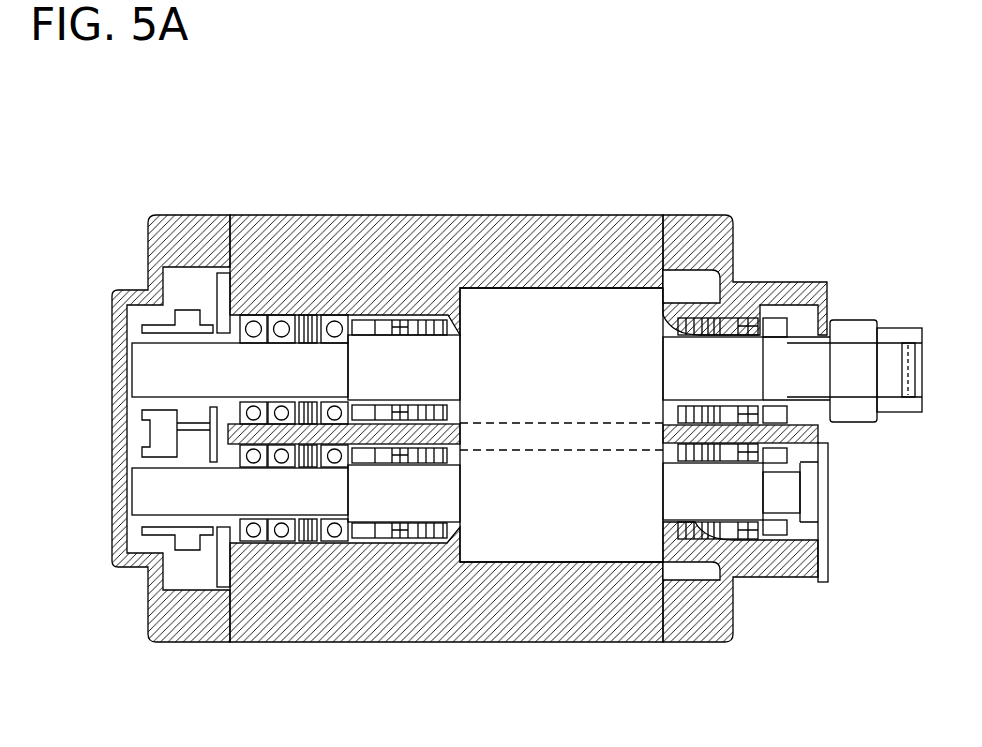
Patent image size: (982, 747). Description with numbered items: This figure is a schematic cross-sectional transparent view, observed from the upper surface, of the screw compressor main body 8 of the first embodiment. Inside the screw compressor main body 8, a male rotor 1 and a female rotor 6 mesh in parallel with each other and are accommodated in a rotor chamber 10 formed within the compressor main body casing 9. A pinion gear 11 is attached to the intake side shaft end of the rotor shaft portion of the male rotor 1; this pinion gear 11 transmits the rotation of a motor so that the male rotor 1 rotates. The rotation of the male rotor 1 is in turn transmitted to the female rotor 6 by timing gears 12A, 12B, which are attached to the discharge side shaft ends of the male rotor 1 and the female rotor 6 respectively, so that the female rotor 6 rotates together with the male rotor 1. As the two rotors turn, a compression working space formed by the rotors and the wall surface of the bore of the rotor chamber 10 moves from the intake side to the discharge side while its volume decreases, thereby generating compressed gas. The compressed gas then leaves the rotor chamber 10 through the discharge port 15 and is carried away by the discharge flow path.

The screw compressor main body 8 is at (470, 419).
The male rotor 1 is at (515, 320).
The compressor main body casing 9 is at (573, 213).
The rotor chamber 10 is at (603, 563).
The discharge port 15 is at (733, 247).
The pinion gear 11 is at (857, 317).
The timing gear 12A is at (190, 328).
The timing gear 12B is at (160, 553).
The female rotor 6 is at (515, 533).